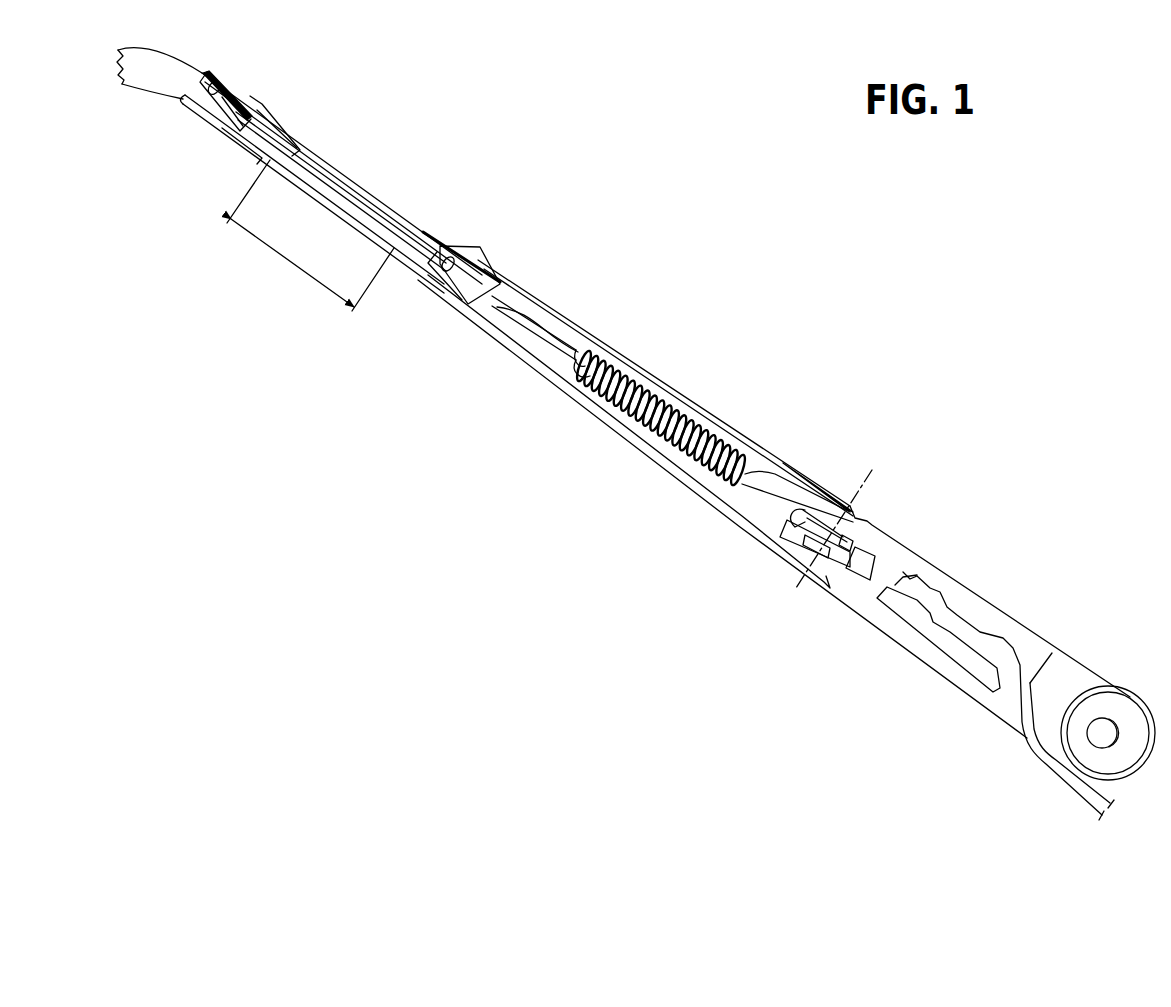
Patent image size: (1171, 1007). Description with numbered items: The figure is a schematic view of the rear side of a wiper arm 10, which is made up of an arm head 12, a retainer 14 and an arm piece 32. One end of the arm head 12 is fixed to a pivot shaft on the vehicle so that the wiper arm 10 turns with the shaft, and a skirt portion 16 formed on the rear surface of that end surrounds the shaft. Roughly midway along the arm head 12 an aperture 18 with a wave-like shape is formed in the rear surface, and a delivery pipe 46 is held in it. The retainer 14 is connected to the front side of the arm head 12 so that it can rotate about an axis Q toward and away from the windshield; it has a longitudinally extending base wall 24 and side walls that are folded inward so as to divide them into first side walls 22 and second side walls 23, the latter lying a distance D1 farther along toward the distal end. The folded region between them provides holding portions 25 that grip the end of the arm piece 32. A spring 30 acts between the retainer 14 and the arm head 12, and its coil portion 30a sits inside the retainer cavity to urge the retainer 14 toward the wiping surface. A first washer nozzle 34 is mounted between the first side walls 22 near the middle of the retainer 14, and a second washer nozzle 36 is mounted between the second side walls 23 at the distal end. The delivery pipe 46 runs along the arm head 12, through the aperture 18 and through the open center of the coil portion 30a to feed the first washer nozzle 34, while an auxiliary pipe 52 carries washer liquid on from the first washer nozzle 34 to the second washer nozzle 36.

The wiper arm 10 is at (650, 272).
The arm head 12 is at (975, 598).
The retainer 14 is at (733, 425).
The skirt portion 16 is at (1087, 697).
The aperture 18 is at (952, 625).
The first side walls 22 is at (670, 395).
The second side walls 23 is at (267, 117).
The base wall 24 is at (673, 456).
The holding portions 25 is at (394, 211).
The spring 30 is at (633, 364).
The coil portion 30a is at (630, 372).
The arm piece 32 is at (177, 69).
The first washer nozzle 34 is at (466, 262).
The second washer nozzle 36 is at (232, 106).
The delivery pipe 46 is at (780, 481).
The auxiliary pipe 52 is at (357, 197).
The distance D1 is at (310, 235).
The axis Q is at (778, 606).